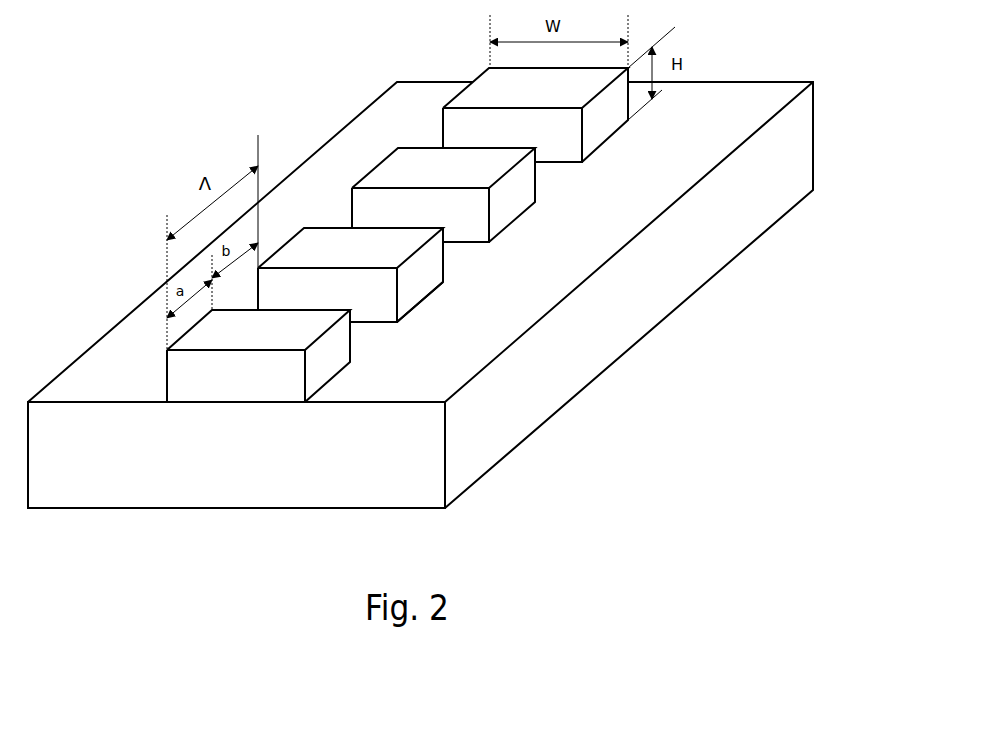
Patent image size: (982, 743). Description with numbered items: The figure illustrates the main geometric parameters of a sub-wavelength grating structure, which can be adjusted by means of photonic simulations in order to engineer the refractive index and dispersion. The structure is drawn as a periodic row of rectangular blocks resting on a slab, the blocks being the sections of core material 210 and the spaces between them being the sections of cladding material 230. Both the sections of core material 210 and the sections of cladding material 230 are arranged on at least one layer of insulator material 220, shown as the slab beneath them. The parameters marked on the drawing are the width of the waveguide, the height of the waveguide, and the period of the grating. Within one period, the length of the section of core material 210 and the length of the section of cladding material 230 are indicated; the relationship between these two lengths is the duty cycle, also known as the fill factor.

The section of core material 210 is at (418, 282).
The layer of insulator material 220 is at (762, 97).
The section of cladding material 230 is at (455, 253).